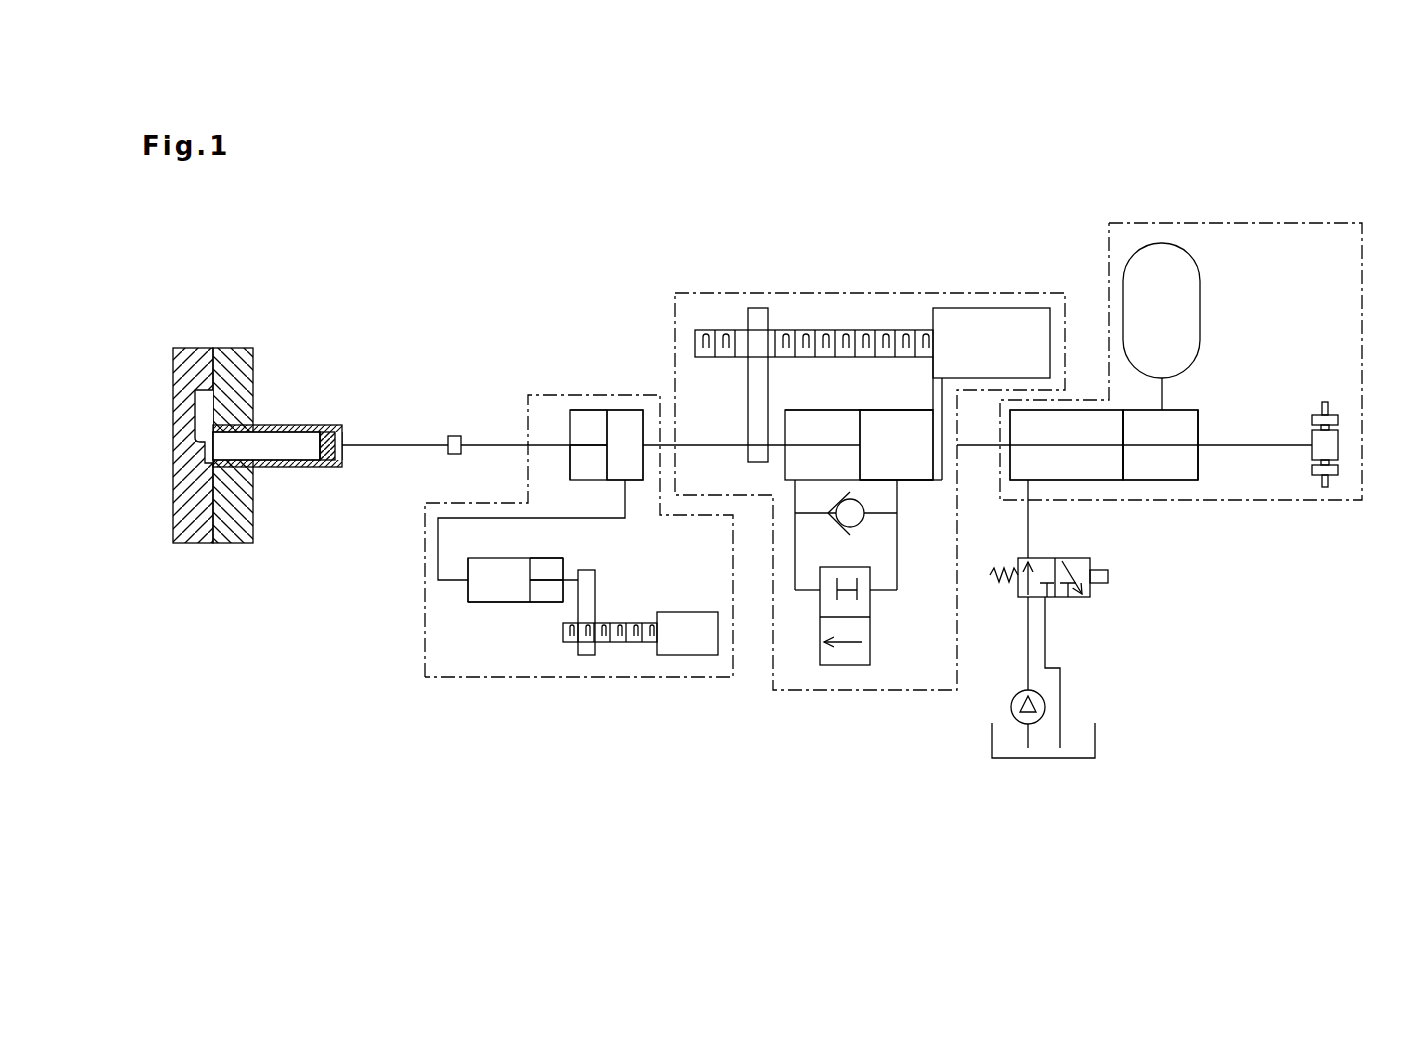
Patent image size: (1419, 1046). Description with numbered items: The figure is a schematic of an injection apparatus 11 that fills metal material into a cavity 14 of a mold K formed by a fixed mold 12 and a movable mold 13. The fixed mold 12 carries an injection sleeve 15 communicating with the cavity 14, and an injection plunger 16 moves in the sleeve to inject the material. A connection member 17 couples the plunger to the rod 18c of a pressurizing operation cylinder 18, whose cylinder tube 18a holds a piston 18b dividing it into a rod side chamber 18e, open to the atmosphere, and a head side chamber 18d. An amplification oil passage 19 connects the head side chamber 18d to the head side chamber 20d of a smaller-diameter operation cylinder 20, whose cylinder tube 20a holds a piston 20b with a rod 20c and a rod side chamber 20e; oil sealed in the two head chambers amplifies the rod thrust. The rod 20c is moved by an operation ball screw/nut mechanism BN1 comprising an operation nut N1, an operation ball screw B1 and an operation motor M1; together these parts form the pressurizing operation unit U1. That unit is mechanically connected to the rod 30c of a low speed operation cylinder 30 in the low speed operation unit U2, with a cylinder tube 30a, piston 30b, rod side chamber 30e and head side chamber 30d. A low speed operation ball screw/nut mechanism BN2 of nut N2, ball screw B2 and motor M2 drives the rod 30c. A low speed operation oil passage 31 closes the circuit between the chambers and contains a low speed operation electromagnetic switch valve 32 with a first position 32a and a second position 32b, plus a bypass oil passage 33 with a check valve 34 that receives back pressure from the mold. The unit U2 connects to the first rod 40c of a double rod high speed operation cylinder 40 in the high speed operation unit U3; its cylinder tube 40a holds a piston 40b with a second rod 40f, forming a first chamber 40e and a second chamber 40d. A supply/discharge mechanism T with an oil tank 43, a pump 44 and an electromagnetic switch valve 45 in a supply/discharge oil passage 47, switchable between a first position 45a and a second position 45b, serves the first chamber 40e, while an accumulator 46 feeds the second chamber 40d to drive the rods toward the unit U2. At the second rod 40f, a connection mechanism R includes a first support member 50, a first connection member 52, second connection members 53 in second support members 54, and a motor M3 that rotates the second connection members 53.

The injection apparatus 11 is at (1019, 226).
The fixed mold 12 is at (236, 544).
The movable mold 13 is at (190, 544).
The cavity 14 is at (203, 412).
The injection sleeve 15 is at (319, 469).
The injection plunger 16 is at (330, 430).
The connection member 17 is at (452, 435).
The pressurizing operation cylinder 18 is at (564, 428).
The cylinder tube 18a is at (578, 410).
The piston 18b is at (603, 468).
The rod 18c is at (492, 441).
The head side chamber 18d is at (628, 423).
The rod side chamber 18e is at (575, 458).
The amplification oil passage 19 is at (438, 563).
The operation cylinder 20 is at (495, 600).
The cylinder tube 20a is at (490, 603).
The piston 20b is at (526, 603).
The rod 20c is at (572, 578).
The head side chamber 20d is at (468, 584).
The rod side chamber 20e is at (548, 561).
The low speed operation cylinder 30 is at (862, 447).
The cylinder tube 30a is at (915, 483).
The piston 30b is at (865, 466).
The rod 30c is at (708, 441).
The head side chamber 30d is at (900, 421).
The rod side chamber 30e is at (805, 421).
The low speed operation oil passage 31 is at (795, 592).
The low speed operation electromagnetic switch valve 32 is at (880, 650).
The first position 32a is at (872, 605).
The second position 32b is at (872, 655).
The bypass oil passage 33 is at (815, 516).
The check valve 34 is at (865, 527).
The high speed operation cylinder 40 is at (1161, 447).
The cylinder tube 40a is at (1200, 460).
The piston 40b is at (1125, 470).
The first rod 40c is at (980, 448).
The second chamber 40d is at (1178, 470).
The first chamber 40e is at (1050, 470).
The second rod 40f is at (1255, 443).
The oil tank 43 is at (1097, 745).
The pump 44 is at (1010, 707).
The electromagnetic switch valve 45 is at (1058, 561).
The first position 45a is at (1018, 596).
The second position 45b is at (1080, 556).
The accumulator 46 is at (1203, 297).
The supply/discharge oil passage 47 is at (1030, 656).
The first support member 50 is at (1340, 447).
The first connection member 52 is at (1315, 432).
The second connection member 53 is at (1330, 418).
The second support member 54 is at (1338, 420).
The operation ball screw B1 is at (625, 623).
The low speed operation ball screw B2 is at (840, 328).
The operation ball screw/nut mechanism BN1 is at (668, 660).
The low speed operation ball screw/nut mechanism BN2 is at (906, 318).
The operation motor M1 is at (688, 612).
The low speed operation motor M2 is at (980, 306).
The motor M3 is at (1326, 402).
The operation nut N1 is at (586, 657).
The low speed operation nut N2 is at (760, 306).
The mold K is at (191, 495).
The connection mechanism R is at (1366, 475).
The supply/discharge mechanism T is at (1066, 629).
The pressurizing operation unit U1 is at (424, 680).
The low speed operation unit U2 is at (777, 693).
The high speed operation unit U3 is at (1311, 219).